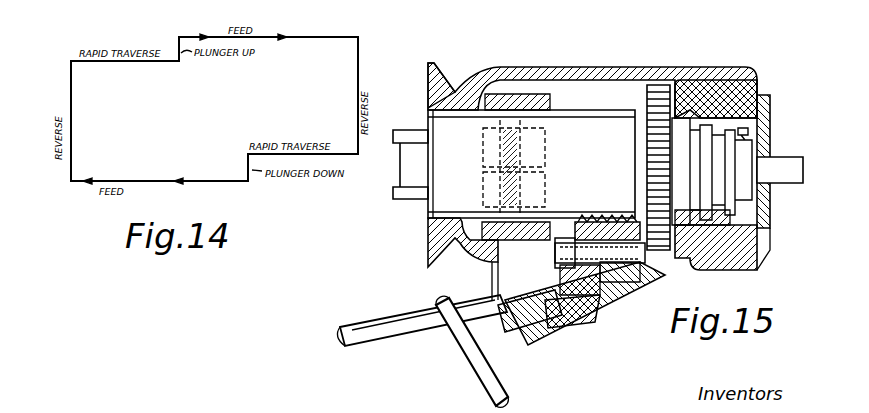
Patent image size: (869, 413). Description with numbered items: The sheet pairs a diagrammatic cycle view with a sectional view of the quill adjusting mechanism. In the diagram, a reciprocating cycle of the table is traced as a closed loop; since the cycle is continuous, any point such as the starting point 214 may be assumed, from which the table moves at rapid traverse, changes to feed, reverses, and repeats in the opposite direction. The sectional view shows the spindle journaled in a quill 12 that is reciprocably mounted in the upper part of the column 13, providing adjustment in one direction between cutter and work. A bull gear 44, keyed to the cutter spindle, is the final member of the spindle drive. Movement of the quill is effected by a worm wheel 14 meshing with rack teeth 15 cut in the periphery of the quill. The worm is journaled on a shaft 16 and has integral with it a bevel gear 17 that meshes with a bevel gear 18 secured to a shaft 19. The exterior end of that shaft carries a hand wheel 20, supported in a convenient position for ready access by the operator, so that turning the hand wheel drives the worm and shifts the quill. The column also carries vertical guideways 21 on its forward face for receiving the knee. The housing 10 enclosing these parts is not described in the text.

In FIG. 14, the starting point 214 is at (71, 62).
In FIG. 15, the housing 10 is at (406, 200).
In FIG. 15, the quill 12 is at (600, 108).
In FIG. 15, the column 13 is at (702, 76).
In FIG. 15, the worm wheel 14 is at (616, 302).
In FIG. 15, the rack teeth 15 is at (604, 216).
In FIG. 15, the shaft 16 is at (634, 296).
In FIG. 15, the bevel gear 17 is at (588, 216).
In FIG. 15, the bevel gear 18 is at (600, 322).
In FIG. 15, the shaft 19 is at (522, 342).
In FIG. 15, the hand wheel 20 is at (502, 388).
In FIG. 15, the vertical guideways 21 is at (440, 62).
In FIG. 15, the bull gear 44 is at (660, 88).